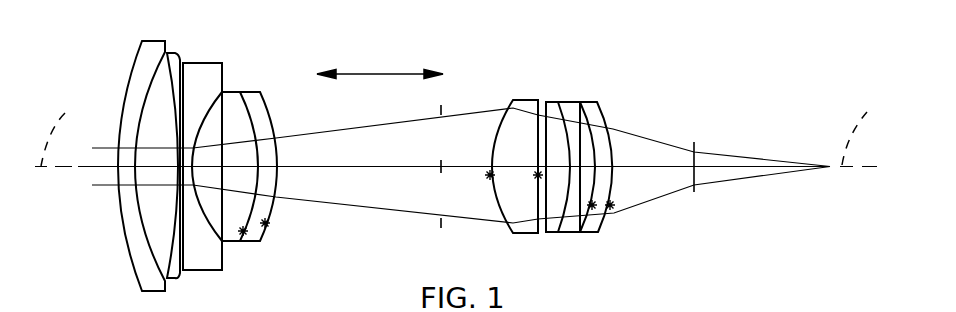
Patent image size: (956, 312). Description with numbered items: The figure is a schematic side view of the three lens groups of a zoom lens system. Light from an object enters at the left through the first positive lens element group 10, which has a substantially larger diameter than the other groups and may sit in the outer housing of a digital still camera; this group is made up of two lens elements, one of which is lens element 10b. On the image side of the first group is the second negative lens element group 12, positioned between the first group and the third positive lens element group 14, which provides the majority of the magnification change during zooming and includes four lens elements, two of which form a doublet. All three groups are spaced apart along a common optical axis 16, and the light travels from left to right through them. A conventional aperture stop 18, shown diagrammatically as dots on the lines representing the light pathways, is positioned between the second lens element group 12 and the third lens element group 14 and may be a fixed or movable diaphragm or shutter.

The first positive lens element group 10 is at (178, 40).
The lens element 10b is at (203, 186).
The second negative lens element group 12 is at (280, 63).
The third positive lens element group 14 is at (608, 95).
The optical axis 16 is at (464, 129).
The aperture stop 18 is at (448, 223).